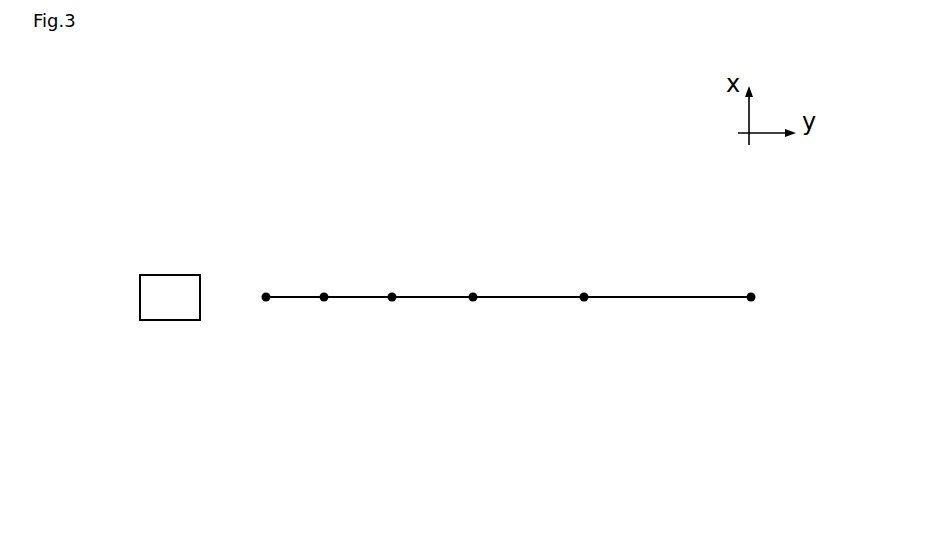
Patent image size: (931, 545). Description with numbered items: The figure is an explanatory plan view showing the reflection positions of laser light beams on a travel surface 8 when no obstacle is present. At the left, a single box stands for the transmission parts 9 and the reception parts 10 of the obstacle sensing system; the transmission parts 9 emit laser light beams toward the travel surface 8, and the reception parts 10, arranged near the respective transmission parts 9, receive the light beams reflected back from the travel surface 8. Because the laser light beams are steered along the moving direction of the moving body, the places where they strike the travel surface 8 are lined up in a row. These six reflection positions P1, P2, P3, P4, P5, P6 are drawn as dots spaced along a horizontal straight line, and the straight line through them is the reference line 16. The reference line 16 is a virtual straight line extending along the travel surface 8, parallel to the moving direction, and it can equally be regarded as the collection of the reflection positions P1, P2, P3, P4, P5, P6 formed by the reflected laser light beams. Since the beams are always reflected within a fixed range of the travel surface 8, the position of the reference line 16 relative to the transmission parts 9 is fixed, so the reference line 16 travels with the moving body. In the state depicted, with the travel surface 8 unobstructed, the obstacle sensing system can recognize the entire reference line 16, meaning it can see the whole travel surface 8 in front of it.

The travel surface 8 is at (470, 211).
The transmission part 9 is at (177, 261).
The reception part 10 is at (215, 226).
The reference line 16 is at (652, 297).
The reflection position P1 is at (266, 300).
The reflection position P2 is at (324, 300).
The reflection position P3 is at (392, 300).
The reflection position P4 is at (473, 300).
The reflection position P5 is at (584, 300).
The reflection position P6 is at (751, 300).